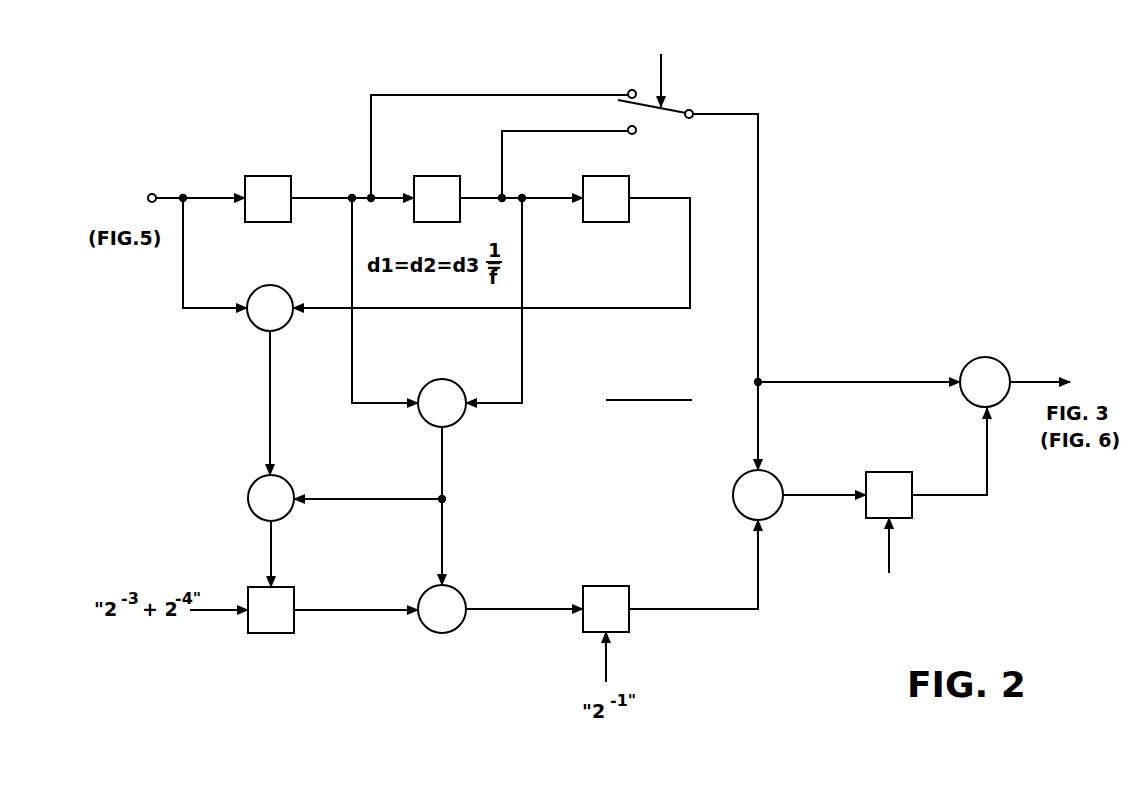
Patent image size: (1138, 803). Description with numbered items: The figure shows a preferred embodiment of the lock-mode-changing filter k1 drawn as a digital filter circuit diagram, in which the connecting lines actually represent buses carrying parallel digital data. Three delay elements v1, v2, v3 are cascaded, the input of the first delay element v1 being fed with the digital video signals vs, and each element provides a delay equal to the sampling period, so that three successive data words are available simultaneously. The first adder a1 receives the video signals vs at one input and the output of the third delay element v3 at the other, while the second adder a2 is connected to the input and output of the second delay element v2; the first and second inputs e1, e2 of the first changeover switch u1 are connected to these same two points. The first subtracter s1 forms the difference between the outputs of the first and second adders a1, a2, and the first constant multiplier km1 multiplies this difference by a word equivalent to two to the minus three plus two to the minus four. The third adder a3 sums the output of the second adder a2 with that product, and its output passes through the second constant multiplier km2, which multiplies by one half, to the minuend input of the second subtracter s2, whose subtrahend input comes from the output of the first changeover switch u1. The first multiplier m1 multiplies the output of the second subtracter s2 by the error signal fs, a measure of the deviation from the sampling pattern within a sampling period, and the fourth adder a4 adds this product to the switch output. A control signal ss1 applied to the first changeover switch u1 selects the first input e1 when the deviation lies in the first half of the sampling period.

The digital video signals vs is at (179, 248).
The first delay element v1 is at (268, 176).
The second delay element v2 is at (438, 176).
The third delay element v3 is at (606, 176).
The first adder a1 is at (286, 292).
The second adder a2 is at (456, 383).
The third adder a3 is at (460, 592).
The fourth adder a4 is at (1001, 366).
The first subtracter s1 is at (289, 485).
The second subtracter s2 is at (736, 486).
The first constant multiplier km1 is at (283, 587).
The second constant multiplier km2 is at (607, 586).
The first multiplier m1 is at (892, 472).
The lock-mode-changing filter k1 is at (649, 387).
The first input of the first changeover switch e1 is at (507, 131).
The second input of the first changeover switch e2 is at (569, 153).
The control signal ss1 is at (663, 68).
The first changeover switch u1 is at (672, 112).
The error signal fs is at (888, 561).